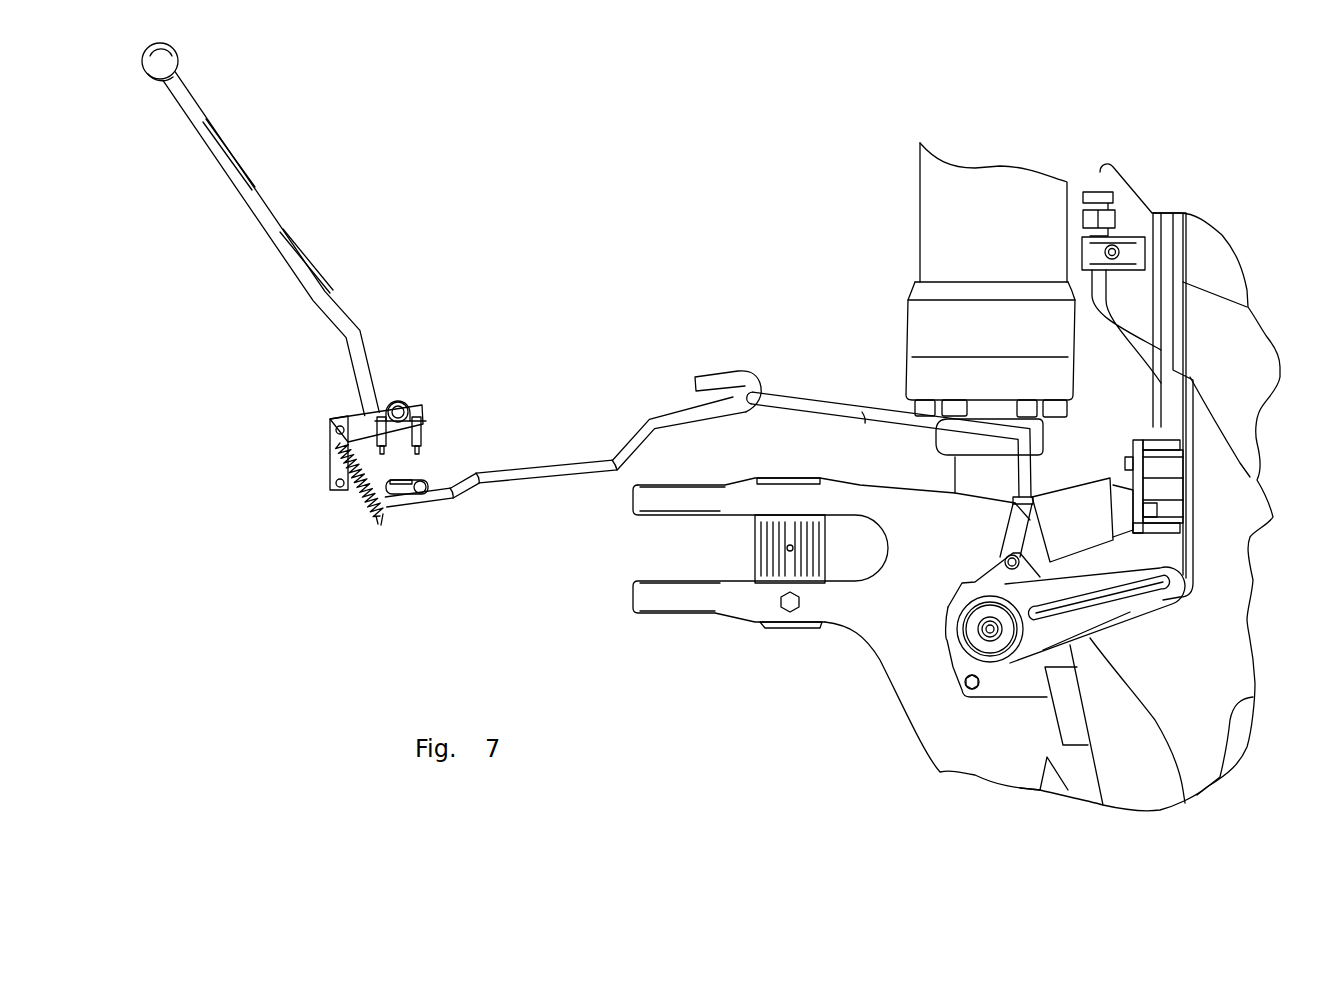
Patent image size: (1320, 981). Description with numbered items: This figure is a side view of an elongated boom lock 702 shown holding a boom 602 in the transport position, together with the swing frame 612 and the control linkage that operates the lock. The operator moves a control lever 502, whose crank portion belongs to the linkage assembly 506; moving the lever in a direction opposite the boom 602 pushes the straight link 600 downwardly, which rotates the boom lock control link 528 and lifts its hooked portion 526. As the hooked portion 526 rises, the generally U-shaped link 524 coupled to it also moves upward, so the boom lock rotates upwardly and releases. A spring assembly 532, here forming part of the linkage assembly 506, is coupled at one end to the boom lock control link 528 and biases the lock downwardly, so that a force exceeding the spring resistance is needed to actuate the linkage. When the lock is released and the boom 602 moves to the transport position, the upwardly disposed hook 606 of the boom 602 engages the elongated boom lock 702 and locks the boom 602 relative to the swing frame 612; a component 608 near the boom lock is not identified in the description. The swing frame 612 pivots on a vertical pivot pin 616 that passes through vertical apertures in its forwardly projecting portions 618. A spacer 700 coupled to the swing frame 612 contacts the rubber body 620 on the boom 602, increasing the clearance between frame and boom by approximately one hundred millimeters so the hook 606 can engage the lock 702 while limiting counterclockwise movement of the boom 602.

The control lever 502 is at (258, 204).
The linkage assembly 506 is at (515, 338).
The U-shaped link 524 is at (780, 393).
The hooked portion 526 is at (723, 378).
The boom lock control link 528 is at (460, 500).
The spring assembly 532 is at (357, 490).
The straight link 600 is at (357, 423).
The boom 602 is at (1226, 690).
The upwardly disposed hook 606 is at (1144, 619).
The pivot hub 608 is at (985, 635).
The swing frame 612 is at (835, 605).
The vertical pivot pin 616 is at (765, 540).
The forwardly projecting portions 618 is at (633, 598).
The rubber body 620 is at (1120, 507).
The spacer 700 is at (1095, 531).
The elongated boom lock 702 is at (1080, 645).